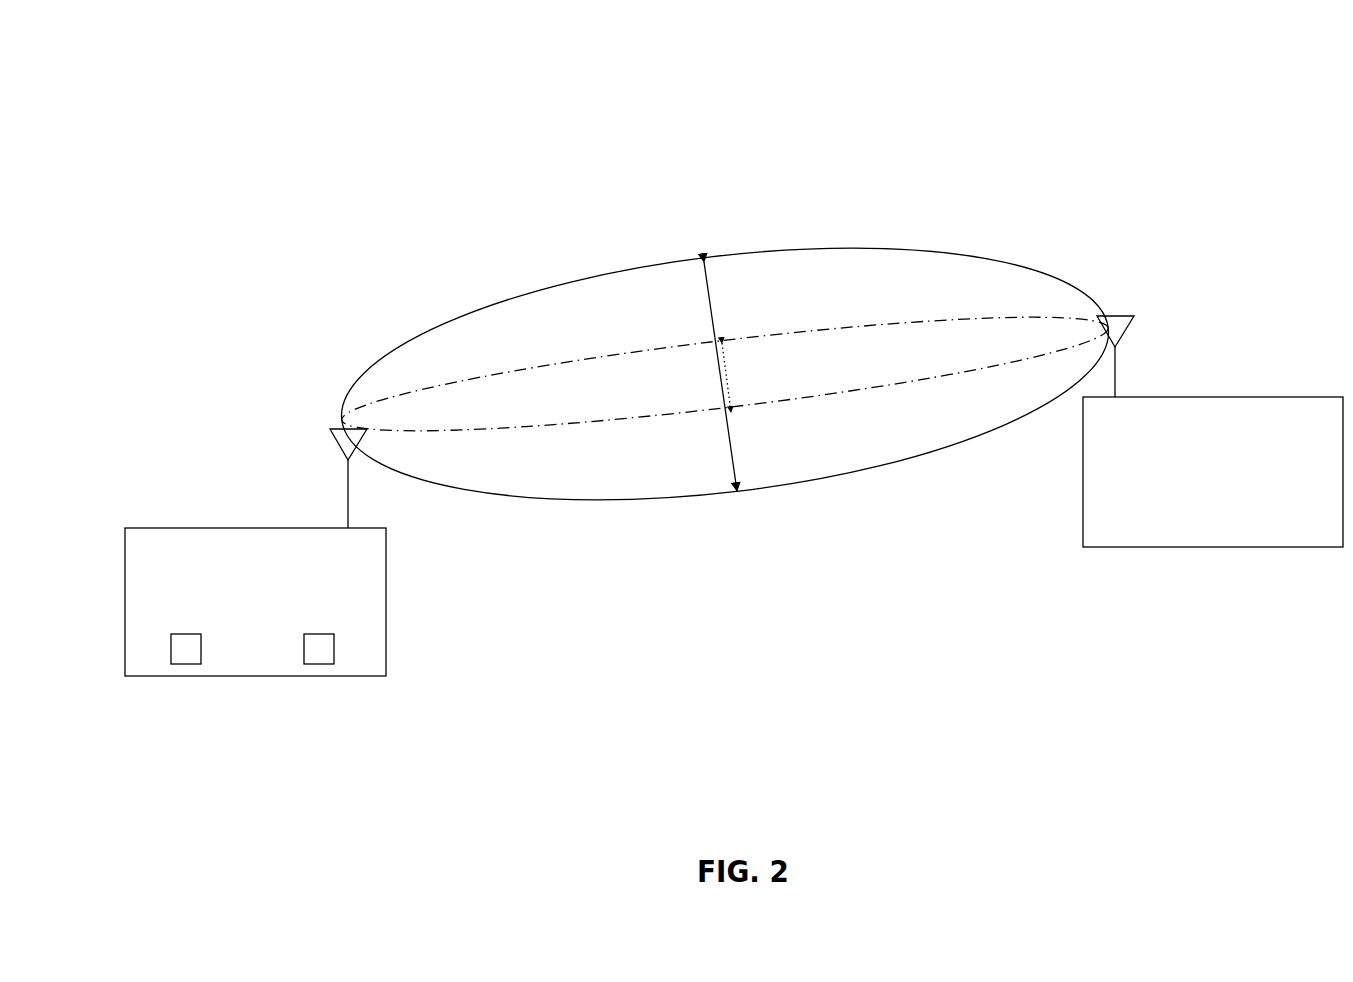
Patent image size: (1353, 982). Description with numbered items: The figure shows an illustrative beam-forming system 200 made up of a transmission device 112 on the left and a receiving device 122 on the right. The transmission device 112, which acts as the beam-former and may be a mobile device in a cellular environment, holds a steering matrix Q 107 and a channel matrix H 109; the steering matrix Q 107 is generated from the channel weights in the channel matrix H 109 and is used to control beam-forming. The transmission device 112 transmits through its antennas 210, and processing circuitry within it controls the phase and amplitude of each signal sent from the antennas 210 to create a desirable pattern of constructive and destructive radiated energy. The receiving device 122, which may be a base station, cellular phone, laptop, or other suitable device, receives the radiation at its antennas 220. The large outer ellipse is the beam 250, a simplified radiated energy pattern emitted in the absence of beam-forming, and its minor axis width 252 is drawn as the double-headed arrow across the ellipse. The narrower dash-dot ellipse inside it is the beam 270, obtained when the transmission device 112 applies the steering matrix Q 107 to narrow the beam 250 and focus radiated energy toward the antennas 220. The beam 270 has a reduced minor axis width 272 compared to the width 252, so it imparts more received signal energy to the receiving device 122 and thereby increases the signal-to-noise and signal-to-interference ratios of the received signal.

The beam-forming system 200 is at (140, 79).
The transmission device 112 is at (198, 527).
The steering matrix Q 107 is at (202, 650).
The channel matrix H 109 is at (335, 650).
The antennas 210 is at (346, 430).
The receiving device 122 is at (1270, 397).
The antennas 220 is at (1100, 317).
The beam 250 is at (588, 281).
The minor axis width 252 is at (712, 298).
The beam 270 is at (588, 365).
The width 272 is at (728, 386).